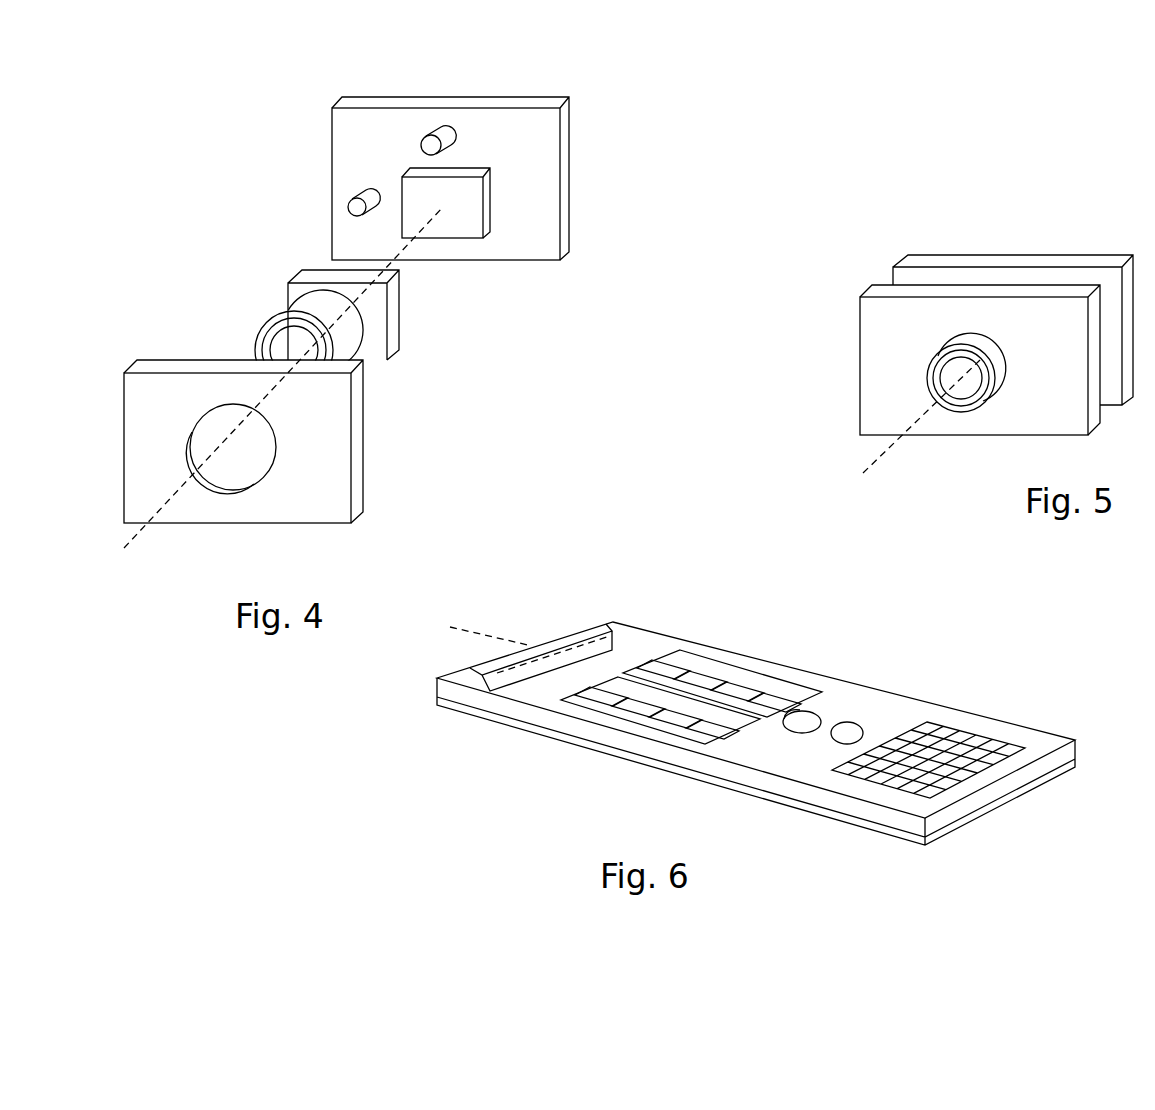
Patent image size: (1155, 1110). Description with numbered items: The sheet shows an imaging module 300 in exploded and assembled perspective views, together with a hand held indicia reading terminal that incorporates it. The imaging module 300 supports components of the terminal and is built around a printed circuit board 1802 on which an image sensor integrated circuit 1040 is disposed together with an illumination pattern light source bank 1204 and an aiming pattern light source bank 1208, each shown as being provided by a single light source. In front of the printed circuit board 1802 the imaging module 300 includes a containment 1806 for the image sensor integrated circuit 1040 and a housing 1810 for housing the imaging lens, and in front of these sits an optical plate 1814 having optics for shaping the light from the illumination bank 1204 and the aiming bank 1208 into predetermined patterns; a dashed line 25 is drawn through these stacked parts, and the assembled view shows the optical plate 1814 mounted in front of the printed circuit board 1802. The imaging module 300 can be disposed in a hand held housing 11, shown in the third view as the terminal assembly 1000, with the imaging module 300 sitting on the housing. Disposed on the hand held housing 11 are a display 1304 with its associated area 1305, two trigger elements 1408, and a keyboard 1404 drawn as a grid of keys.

In FIG. 4, the imaging module 300 is at (567, 69).
In FIG. 5, the imaging module 300 is at (1055, 188).
In FIG. 6, the imaging module 300 is at (581, 632).
In FIG. 4, the printed circuit board 1802 is at (552, 190).
In FIG. 5, the printed circuit board 1802 is at (937, 275).
In FIG. 4, the aiming pattern light source bank 1208 is at (433, 132).
In FIG. 4, the illumination pattern light source bank 1204 is at (353, 198).
In FIG. 4, the image sensor integrated circuit 1040 is at (487, 222).
In FIG. 4, the containment 1806 is at (392, 335).
In FIG. 4, the housing 1810 is at (346, 350).
In FIG. 4, the optical plate 1814 is at (346, 504).
In FIG. 5, the optical plate 1814 is at (887, 302).
In FIG. 4, the optical axis 25 is at (142, 532).
In FIG. 5, the optical axis 25 is at (882, 453).
In FIG. 6, the optical axis 25 is at (484, 634).
In FIG. 6, the electronic device assembly 1000 is at (698, 590).
In FIG. 6, the hand held housing 11 is at (1049, 745).
In FIG. 6, the display 1304 is at (762, 673).
In FIG. 6, the chip contact pads 1305 is at (643, 707).
In FIG. 6, the trigger 1408 is at (813, 714).
In FIG. 6, the keyboard 1404 is at (965, 731).